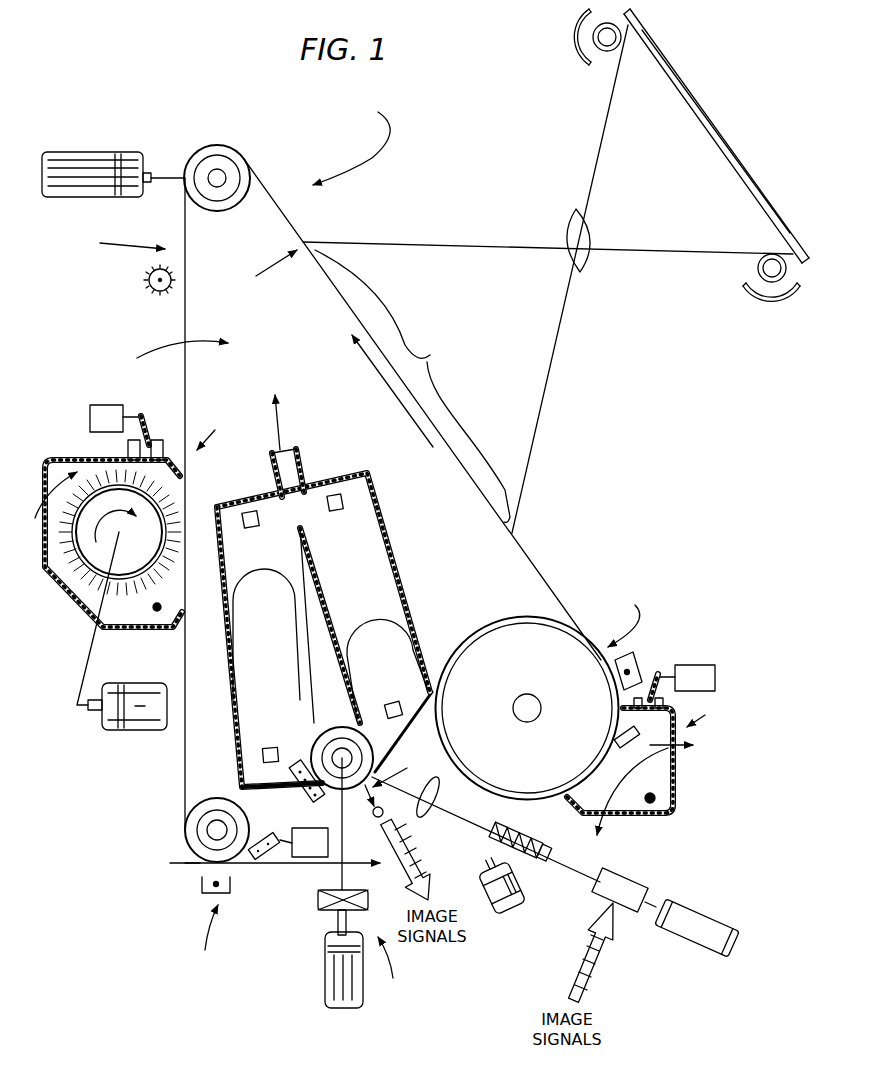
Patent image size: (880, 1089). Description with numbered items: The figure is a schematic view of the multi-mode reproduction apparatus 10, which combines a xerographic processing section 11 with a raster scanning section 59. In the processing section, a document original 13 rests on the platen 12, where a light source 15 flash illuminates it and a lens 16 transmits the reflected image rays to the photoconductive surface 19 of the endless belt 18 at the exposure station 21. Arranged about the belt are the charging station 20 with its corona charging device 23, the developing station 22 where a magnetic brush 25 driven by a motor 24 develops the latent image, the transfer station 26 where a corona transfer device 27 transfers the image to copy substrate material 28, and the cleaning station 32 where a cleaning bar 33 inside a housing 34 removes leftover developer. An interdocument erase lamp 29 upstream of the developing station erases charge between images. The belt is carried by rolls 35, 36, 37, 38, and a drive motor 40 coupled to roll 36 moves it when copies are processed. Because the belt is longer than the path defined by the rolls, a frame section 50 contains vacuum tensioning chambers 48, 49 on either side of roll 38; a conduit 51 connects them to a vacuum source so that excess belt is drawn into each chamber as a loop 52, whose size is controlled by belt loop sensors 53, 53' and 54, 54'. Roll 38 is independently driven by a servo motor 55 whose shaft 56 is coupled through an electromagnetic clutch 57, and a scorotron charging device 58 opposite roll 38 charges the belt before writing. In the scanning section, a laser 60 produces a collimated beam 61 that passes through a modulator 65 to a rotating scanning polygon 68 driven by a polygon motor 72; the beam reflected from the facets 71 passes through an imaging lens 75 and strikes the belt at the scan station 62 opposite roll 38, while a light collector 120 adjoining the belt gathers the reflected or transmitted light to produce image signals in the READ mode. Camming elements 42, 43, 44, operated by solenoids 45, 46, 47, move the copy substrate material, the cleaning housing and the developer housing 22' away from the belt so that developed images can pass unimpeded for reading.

The multi-mode reproduction apparatus 10 is at (344, 127).
The xerographic processing section 11 is at (66, 257).
The platen 12 is at (706, 134).
The document original 13 is at (740, 142).
The light source 15 is at (582, 30).
The lens 16 is at (590, 270).
The endless belt 18 is at (223, 292).
The photoconductive surface 19 is at (286, 203).
The charging station 20 is at (599, 614).
The exposure station 21 is at (412, 386).
The developing station 22 is at (216, 427).
The developer housing 22' is at (105, 543).
The corona charging device 23 is at (636, 658).
The motor 24 is at (158, 683).
The magnetic brush 25 is at (160, 497).
The transfer station 26 is at (186, 974).
The corona transfer device 27 is at (200, 888).
The copy substrate material 28 is at (183, 861).
The interdocument erase lamp 29 is at (148, 284).
The cleaning station 32 is at (704, 730).
The cleaning bar 33 is at (635, 747).
The housing 34 is at (662, 794).
The belt support roll 35 is at (472, 633).
The belt support roll 36 is at (235, 155).
The belt support roll 37 is at (217, 798).
The belt support roll 38 is at (342, 727).
The drive motor 40 is at (97, 152).
The camming element 42 is at (262, 860).
The camming element 43 is at (655, 670).
The camming element 44 is at (150, 416).
The solenoid 45 is at (305, 834).
The solenoid 46 is at (705, 665).
The solenoid 47 is at (90, 407).
The tensioning chamber 48 is at (237, 553).
The tensioning chamber 49 is at (370, 540).
The frame section 50 is at (100, 365).
The conduit 51 is at (292, 455).
The belt loop 52 is at (262, 568).
The maximum belt loop sensor 53 is at (250, 500).
The minimum belt loop sensor 53' is at (272, 739).
The maximum belt loop sensor 54 is at (342, 478).
The minimum belt loop sensor 54' is at (387, 694).
The servo motor 55 is at (325, 968).
The shaft 56 is at (338, 922).
The electromagnetic clutch 57 is at (318, 900).
The scorotron charging device 58 is at (300, 795).
The scanning section 59 is at (386, 1002).
The laser 60 is at (712, 922).
The beam 61 is at (478, 812).
The scan station 62 is at (399, 769).
The modulator 65 is at (596, 890).
The scanning polygon 68 is at (522, 832).
The facets 71 is at (542, 850).
The polygon motor 72 is at (488, 884).
The imaging lens 75 is at (430, 812).
The light collector 120 is at (362, 824).